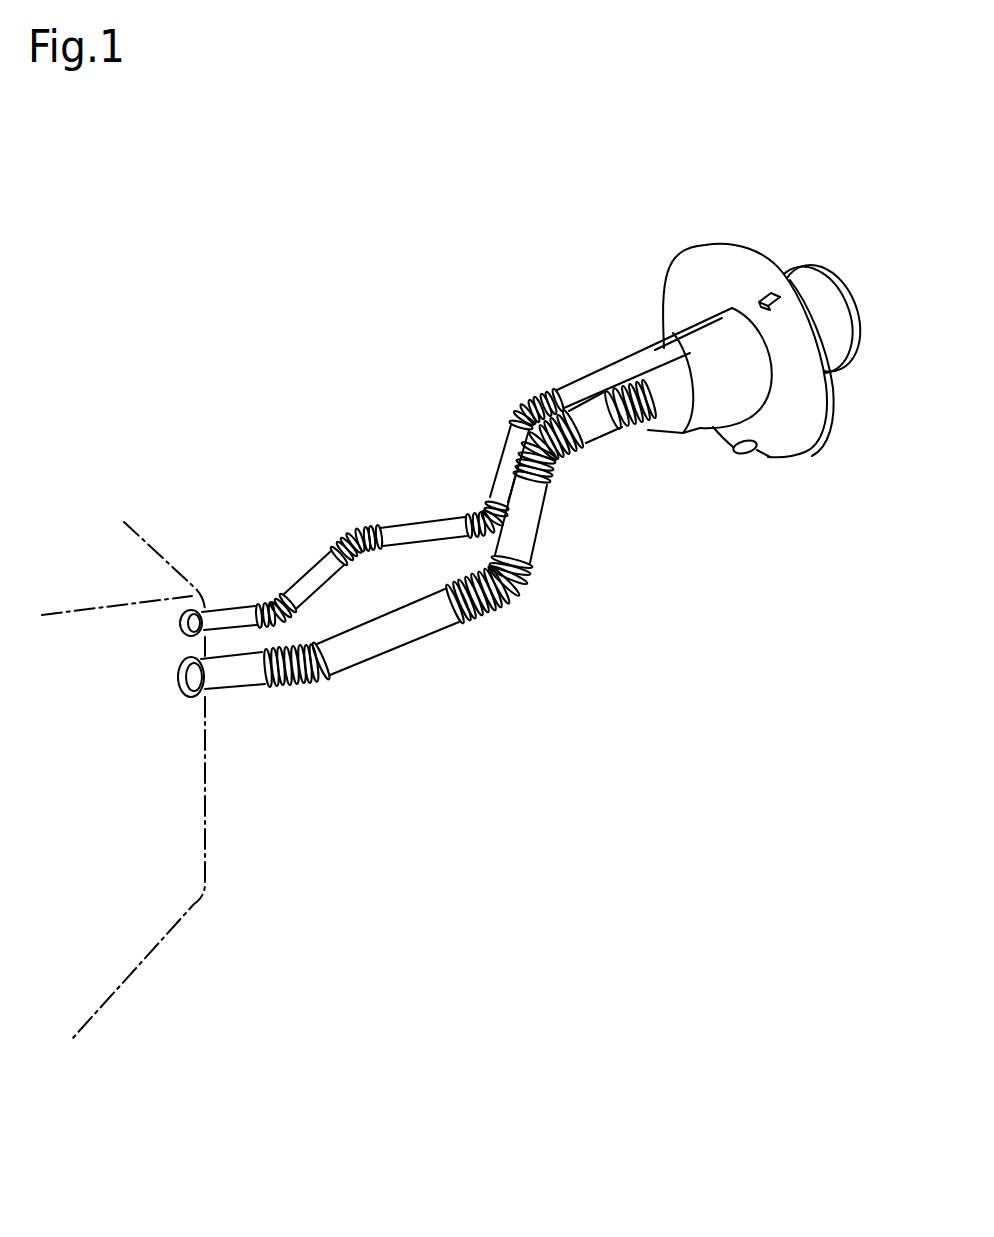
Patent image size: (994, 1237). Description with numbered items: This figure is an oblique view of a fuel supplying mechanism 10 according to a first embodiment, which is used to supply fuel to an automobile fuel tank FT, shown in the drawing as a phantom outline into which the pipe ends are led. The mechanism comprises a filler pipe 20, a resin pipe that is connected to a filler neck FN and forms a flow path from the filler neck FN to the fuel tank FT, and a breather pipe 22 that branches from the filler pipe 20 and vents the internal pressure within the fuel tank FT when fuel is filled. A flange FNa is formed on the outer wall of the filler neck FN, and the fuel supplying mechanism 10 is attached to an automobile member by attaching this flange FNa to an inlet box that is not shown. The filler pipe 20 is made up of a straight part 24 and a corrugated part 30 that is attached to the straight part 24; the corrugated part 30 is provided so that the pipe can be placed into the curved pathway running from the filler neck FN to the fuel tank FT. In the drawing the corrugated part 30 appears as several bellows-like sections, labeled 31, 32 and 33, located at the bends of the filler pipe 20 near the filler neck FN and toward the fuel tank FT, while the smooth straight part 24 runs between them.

The fuel supplying mechanism 10 is at (571, 325).
The filler pipe 20 is at (475, 569).
The breather pipe 22 is at (426, 520).
The straight part 24 is at (530, 528).
The corrugated part 30 is at (486, 584).
The upper bellows portion 31 is at (562, 458).
The bellows portion 32 is at (530, 588).
The bellows portion 33 is at (312, 683).
The filler neck FN is at (800, 268).
The flange FNa is at (717, 272).
The fuel tank FT is at (192, 841).